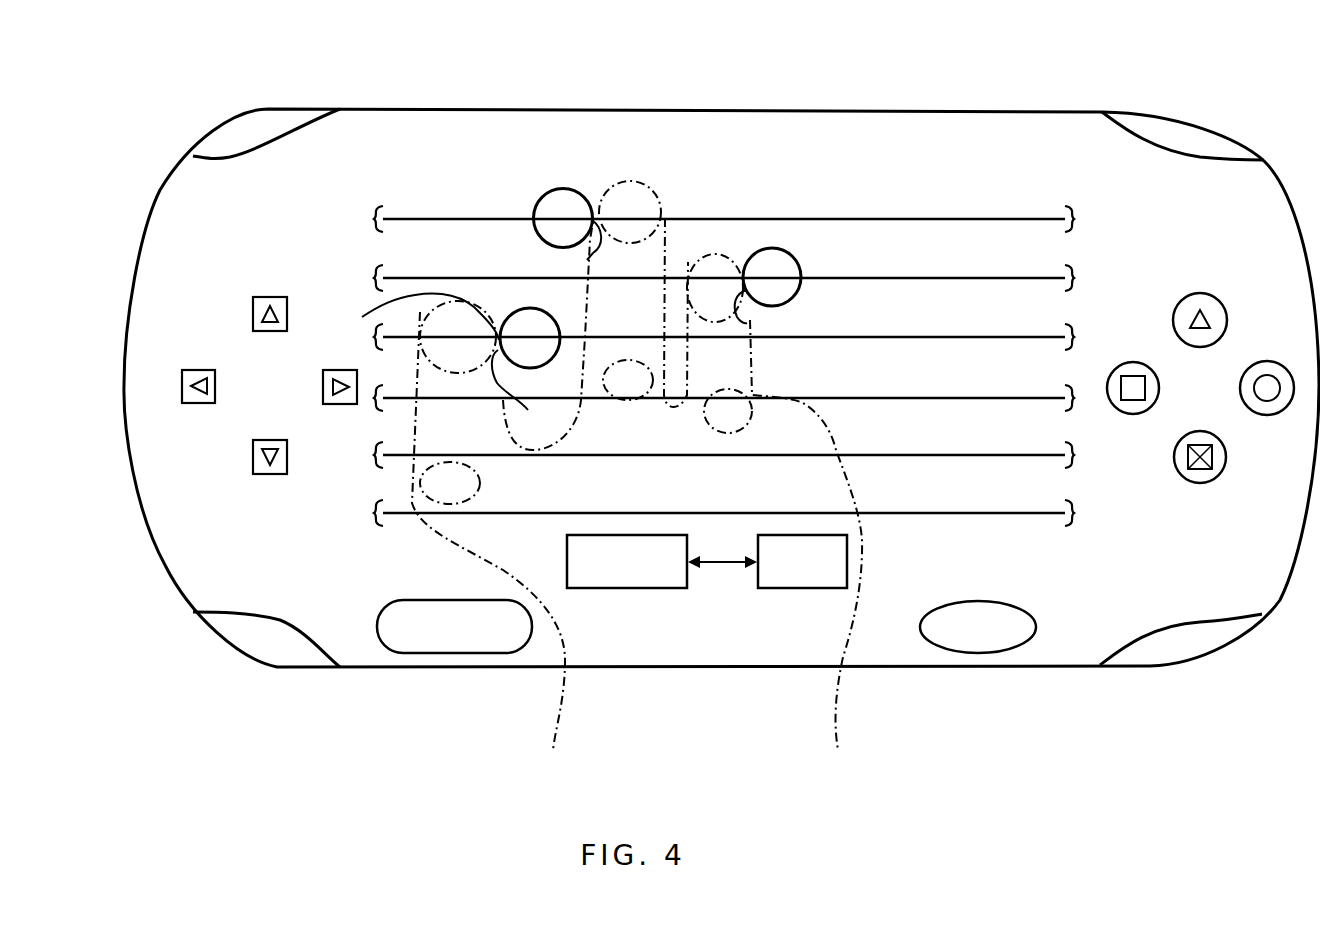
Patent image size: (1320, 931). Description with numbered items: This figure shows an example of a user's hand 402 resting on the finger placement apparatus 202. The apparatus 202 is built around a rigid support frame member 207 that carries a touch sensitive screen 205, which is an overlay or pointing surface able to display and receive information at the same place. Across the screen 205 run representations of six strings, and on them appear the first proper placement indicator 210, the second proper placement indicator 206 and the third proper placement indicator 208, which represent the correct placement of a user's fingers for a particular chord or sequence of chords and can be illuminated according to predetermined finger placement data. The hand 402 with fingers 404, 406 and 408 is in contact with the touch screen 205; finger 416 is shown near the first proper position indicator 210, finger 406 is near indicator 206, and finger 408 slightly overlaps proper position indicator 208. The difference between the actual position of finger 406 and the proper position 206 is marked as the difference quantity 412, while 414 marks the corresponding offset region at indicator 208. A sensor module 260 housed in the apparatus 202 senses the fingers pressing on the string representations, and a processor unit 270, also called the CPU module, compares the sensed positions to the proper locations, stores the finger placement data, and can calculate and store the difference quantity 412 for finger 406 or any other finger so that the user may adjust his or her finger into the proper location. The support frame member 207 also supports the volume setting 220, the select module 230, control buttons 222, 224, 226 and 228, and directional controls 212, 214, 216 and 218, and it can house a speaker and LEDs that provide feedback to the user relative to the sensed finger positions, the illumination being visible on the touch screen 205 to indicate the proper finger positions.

The finger placement apparatus 202 is at (960, 42).
The touch sensitive screen 205 is at (1065, 190).
The proper placement indicator "2" 206 is at (575, 190).
The support frame member 207 is at (868, 673).
The proper placement indicator "3" 208 is at (802, 267).
The proper placement indicator "1" 210 is at (562, 328).
The directional control 212 is at (265, 297).
The directional control 214 is at (200, 370).
The directional control 216 is at (340, 404).
The directional control 218 is at (253, 460).
The volume setting 220 is at (495, 653).
The control button 222 is at (1186, 294).
The control button 224 is at (1116, 364).
The control button 226 is at (1260, 362).
The control button 228 is at (1200, 483).
The select module 230 is at (1010, 652).
The sensor module 260 is at (623, 588).
The processor unit 270 is at (795, 588).
The user's hand 402 is at (820, 413).
The user's finger 404 is at (407, 333).
The user's finger 406 is at (663, 247).
The user's finger 408 is at (740, 270).
The difference quantity 412 is at (590, 233).
The finger contact region 414 is at (747, 323).
The finger 416 is at (523, 396).